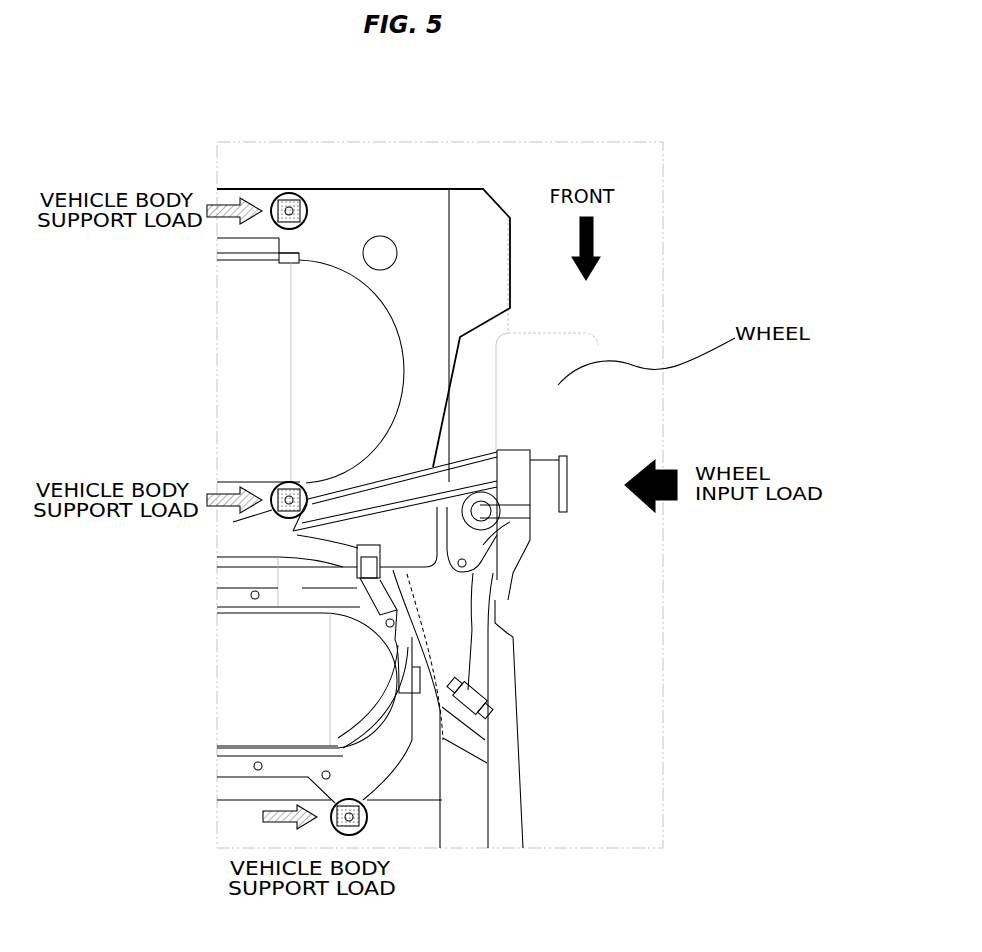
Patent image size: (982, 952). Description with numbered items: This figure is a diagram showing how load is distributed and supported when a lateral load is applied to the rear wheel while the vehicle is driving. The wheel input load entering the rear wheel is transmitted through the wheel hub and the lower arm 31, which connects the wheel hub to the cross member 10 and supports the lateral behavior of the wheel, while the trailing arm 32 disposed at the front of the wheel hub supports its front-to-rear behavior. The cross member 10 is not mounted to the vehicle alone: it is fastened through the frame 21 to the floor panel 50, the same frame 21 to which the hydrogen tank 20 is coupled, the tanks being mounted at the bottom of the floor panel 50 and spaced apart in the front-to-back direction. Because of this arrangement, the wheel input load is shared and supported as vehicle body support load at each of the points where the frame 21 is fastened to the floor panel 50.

The cross member 10 is at (252, 535).
The hydrogen tank 20 is at (283, 682).
The frame 21 is at (238, 768).
The lower arm 31 is at (453, 473).
The trailing arm 32 is at (480, 663).
The floor panel 50 is at (437, 222).